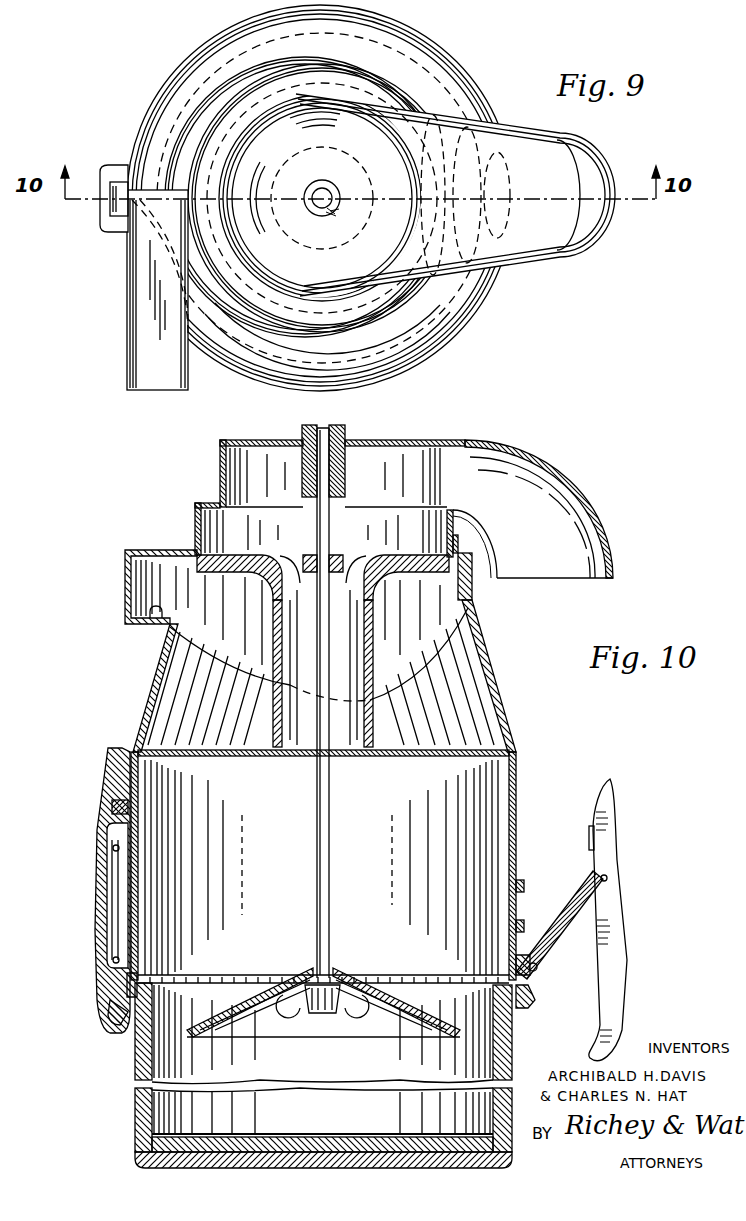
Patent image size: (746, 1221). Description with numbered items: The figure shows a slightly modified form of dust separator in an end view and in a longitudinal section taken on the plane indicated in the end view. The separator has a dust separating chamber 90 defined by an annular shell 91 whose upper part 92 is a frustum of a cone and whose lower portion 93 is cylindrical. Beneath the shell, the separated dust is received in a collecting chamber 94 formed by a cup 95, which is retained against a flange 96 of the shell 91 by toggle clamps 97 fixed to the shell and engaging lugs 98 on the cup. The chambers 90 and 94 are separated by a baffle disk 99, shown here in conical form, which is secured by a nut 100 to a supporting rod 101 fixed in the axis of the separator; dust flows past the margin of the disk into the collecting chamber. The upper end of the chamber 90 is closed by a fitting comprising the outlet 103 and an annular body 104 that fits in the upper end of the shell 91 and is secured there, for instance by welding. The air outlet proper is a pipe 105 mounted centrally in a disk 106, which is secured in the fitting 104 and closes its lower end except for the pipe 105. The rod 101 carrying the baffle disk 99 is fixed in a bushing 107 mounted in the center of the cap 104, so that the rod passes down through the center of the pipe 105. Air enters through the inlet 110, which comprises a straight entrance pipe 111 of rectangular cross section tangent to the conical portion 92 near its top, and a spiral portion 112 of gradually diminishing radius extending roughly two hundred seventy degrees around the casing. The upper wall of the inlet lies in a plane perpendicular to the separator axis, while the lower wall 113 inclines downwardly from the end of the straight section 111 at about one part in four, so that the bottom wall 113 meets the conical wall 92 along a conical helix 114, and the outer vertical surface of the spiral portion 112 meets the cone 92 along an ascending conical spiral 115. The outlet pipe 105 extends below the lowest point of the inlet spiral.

In FIG. 10, the dust separating chamber 90 is at (365, 830).
In FIG. 10, the annular shell 91 is at (518, 792).
In FIG. 9, the upper part of the shell 92 is at (430, 322).
In FIG. 10, the upper part of the shell 92 is at (482, 658).
In FIG. 10, the lower portion of the shell 93 is at (518, 842).
In FIG. 10, the collecting chamber 94 is at (295, 1126).
In FIG. 10, the cup 95 is at (135, 1115).
In FIG. 10, the flange 96 is at (105, 983).
In FIG. 9, the toggle clamps 97 is at (110, 225).
In FIG. 10, the toggle clamps 97 is at (97, 935).
In FIG. 10, the lugs 98 is at (110, 1012).
In FIG. 10, the baffle disk 99 is at (242, 985).
In FIG. 10, the nut 100 is at (346, 1020).
In FIG. 9, the supporting rod 101 is at (330, 197).
In FIG. 10, the supporting rod 101 is at (336, 504).
In FIG. 9, the outlet 103 is at (590, 165).
In FIG. 10, the outlet 103 is at (560, 530).
In FIG. 9, the annular body 104 is at (267, 330).
In FIG. 10, the annular body 104 is at (197, 516).
In FIG. 10, the pipe 105 is at (366, 729).
In FIG. 10, the disk 106 is at (440, 588).
In FIG. 9, the bushing 107 is at (335, 212).
In FIG. 10, the bushing 107 is at (352, 446).
In FIG. 9, the inlet 110 is at (152, 392).
In FIG. 9, the straight entrance pipe 111 is at (180, 126).
In FIG. 10, the straight entrance pipe 111 is at (125, 560).
In FIG. 9, the spiral portion 112 is at (380, 50).
In FIG. 10, the spiral portion 112 is at (432, 562).
In FIG. 10, the lower wall of the inlet 113 is at (135, 628).
In FIG. 10, the conical helix 114 is at (255, 668).
In FIG. 10, the ascending conical spiral 115 is at (440, 672).